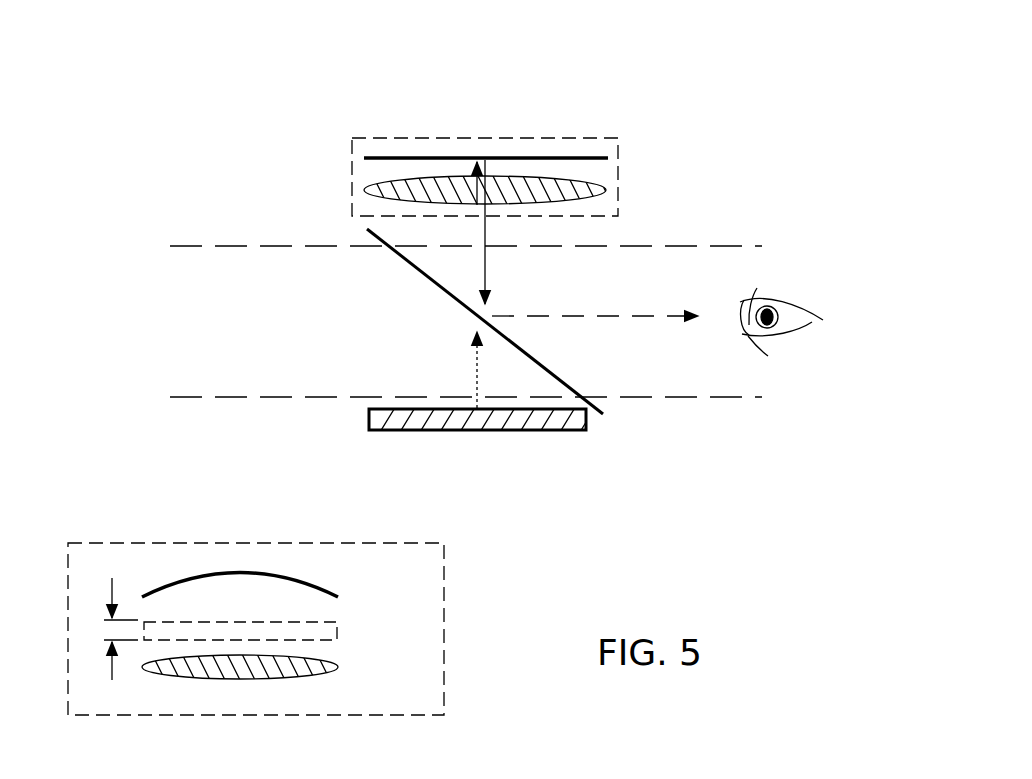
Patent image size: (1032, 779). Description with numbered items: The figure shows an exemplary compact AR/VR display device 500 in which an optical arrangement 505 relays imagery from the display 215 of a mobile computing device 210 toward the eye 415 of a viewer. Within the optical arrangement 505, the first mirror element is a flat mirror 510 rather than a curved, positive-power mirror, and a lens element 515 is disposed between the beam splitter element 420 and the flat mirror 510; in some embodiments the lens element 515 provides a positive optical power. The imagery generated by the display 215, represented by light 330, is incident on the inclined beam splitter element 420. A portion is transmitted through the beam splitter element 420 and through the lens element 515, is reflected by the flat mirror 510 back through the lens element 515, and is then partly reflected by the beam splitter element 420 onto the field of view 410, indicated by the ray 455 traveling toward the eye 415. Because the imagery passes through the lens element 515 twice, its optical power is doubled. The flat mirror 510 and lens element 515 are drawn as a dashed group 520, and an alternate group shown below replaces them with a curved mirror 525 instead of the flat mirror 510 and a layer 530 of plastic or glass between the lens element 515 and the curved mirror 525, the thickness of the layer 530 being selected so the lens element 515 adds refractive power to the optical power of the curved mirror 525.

The compact AR/VR display device 500 is at (772, 80).
The optical arrangement 505 is at (654, 183).
The flat mirror 510 is at (588, 155).
The lens element 515 is at (372, 188).
The group 520 is at (372, 136).
The curved mirror 525 is at (334, 590).
The layer 530 is at (338, 631).
The field of view 410 is at (704, 272).
The eye 415 is at (792, 300).
The beam splitter element 420 is at (603, 414).
The light path 455 is at (490, 312).
The light 330 is at (478, 410).
The mobile computing device 210 is at (560, 432).
The display 215 is at (440, 404).